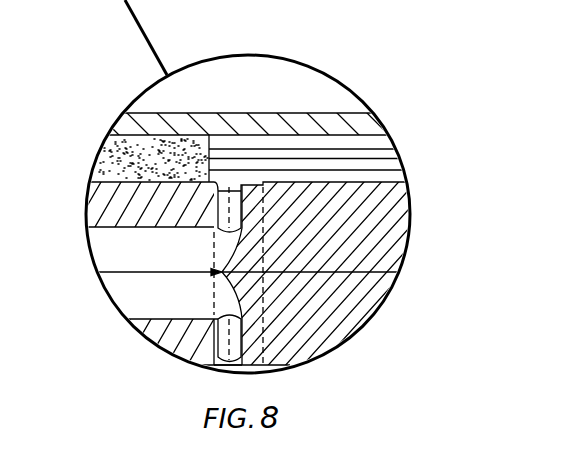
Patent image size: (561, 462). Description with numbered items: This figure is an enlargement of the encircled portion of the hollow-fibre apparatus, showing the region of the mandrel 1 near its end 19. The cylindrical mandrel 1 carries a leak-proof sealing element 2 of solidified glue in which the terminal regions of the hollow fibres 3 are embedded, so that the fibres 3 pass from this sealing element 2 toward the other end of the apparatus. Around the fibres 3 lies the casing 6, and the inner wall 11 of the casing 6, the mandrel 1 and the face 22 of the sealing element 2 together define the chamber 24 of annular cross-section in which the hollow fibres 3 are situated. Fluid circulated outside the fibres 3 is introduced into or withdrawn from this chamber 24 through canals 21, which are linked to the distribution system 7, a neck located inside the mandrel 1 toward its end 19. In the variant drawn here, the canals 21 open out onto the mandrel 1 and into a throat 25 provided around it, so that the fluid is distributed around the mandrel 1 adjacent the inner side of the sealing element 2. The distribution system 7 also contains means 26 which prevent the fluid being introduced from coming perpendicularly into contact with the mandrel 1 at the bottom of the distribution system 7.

The mandrel 1 is at (403, 221).
The sealing element 2 is at (102, 166).
The fibres 3 is at (390, 172).
The casing 6 is at (125, 125).
The distribution system 7 is at (128, 301).
The inner wall 11 is at (323, 135).
The end 19 is at (116, 205).
The canals 21 is at (213, 319).
The face 22 is at (213, 136).
The chamber 24 is at (347, 158).
The throat 25 is at (253, 182).
The means of preventing perpendicular contact 26 is at (222, 272).